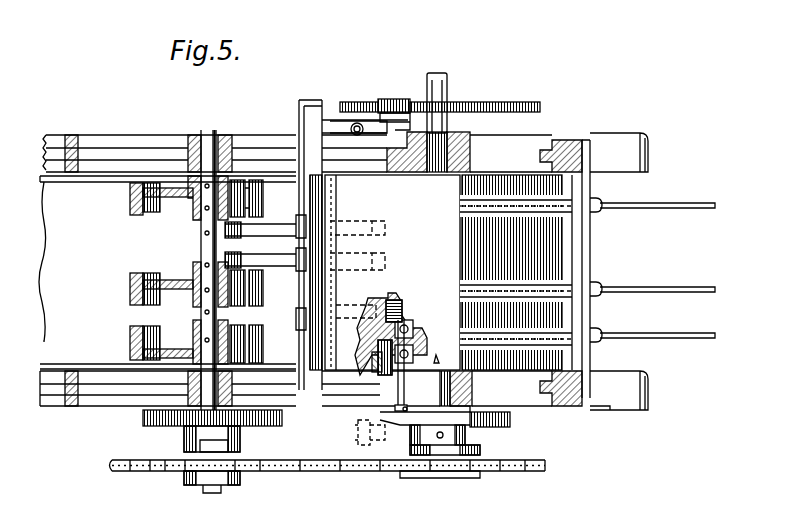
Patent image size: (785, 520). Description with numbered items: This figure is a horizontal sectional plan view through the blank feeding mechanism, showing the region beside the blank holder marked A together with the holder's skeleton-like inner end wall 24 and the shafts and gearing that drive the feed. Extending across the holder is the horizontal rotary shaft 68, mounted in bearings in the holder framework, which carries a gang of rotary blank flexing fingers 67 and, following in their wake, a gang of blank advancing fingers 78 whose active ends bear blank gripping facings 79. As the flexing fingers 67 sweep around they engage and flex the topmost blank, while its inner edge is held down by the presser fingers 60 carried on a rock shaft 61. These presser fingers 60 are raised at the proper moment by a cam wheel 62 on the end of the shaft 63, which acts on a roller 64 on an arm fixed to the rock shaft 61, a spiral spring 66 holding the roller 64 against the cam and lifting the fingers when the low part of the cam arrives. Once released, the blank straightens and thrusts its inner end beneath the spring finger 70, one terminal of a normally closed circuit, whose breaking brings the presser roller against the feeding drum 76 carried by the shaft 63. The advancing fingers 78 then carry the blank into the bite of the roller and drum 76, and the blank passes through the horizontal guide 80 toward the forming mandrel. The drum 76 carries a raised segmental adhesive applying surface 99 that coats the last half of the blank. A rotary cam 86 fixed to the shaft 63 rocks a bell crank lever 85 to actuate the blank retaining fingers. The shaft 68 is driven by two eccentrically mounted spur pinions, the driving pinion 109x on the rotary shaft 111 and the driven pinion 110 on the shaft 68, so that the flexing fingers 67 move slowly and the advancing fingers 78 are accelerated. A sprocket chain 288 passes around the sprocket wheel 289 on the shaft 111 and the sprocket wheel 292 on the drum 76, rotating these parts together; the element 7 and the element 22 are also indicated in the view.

The horizontal rotary shaft 68 is at (209, 133).
The blank gripping facings 79 is at (130, 212).
The blank advancing fingers 78 is at (158, 213).
The housing region A is at (77, 276).
The rotary blank flexing fingers 67 is at (262, 212).
The rock shaft 61 is at (296, 243).
The feeding drum 76 is at (392, 272).
The fingers 60 is at (355, 222).
The inner end wall 24 is at (415, 320).
The shaft 7 is at (400, 300).
The spring finger 70 is at (396, 358).
The element 22 is at (436, 362).
The shaft 63 is at (447, 90).
The cam wheel 62 is at (492, 108).
The roller 64 is at (394, 104).
The spiral spring 66 is at (358, 122).
The raised segmental adhesive applying surface 99 is at (480, 178).
The horizontal guide 80 is at (648, 208).
The driven pinion 110 is at (280, 422).
The driving pinion 109x is at (180, 430).
The sprocket wheel 289 is at (165, 472).
The sprocket chain 288 is at (332, 472).
The sprocket wheel 292 is at (500, 472).
The rotary shaft 111 is at (208, 494).
The rotary cam 86 is at (498, 428).
The bell crank lever 85 is at (378, 446).